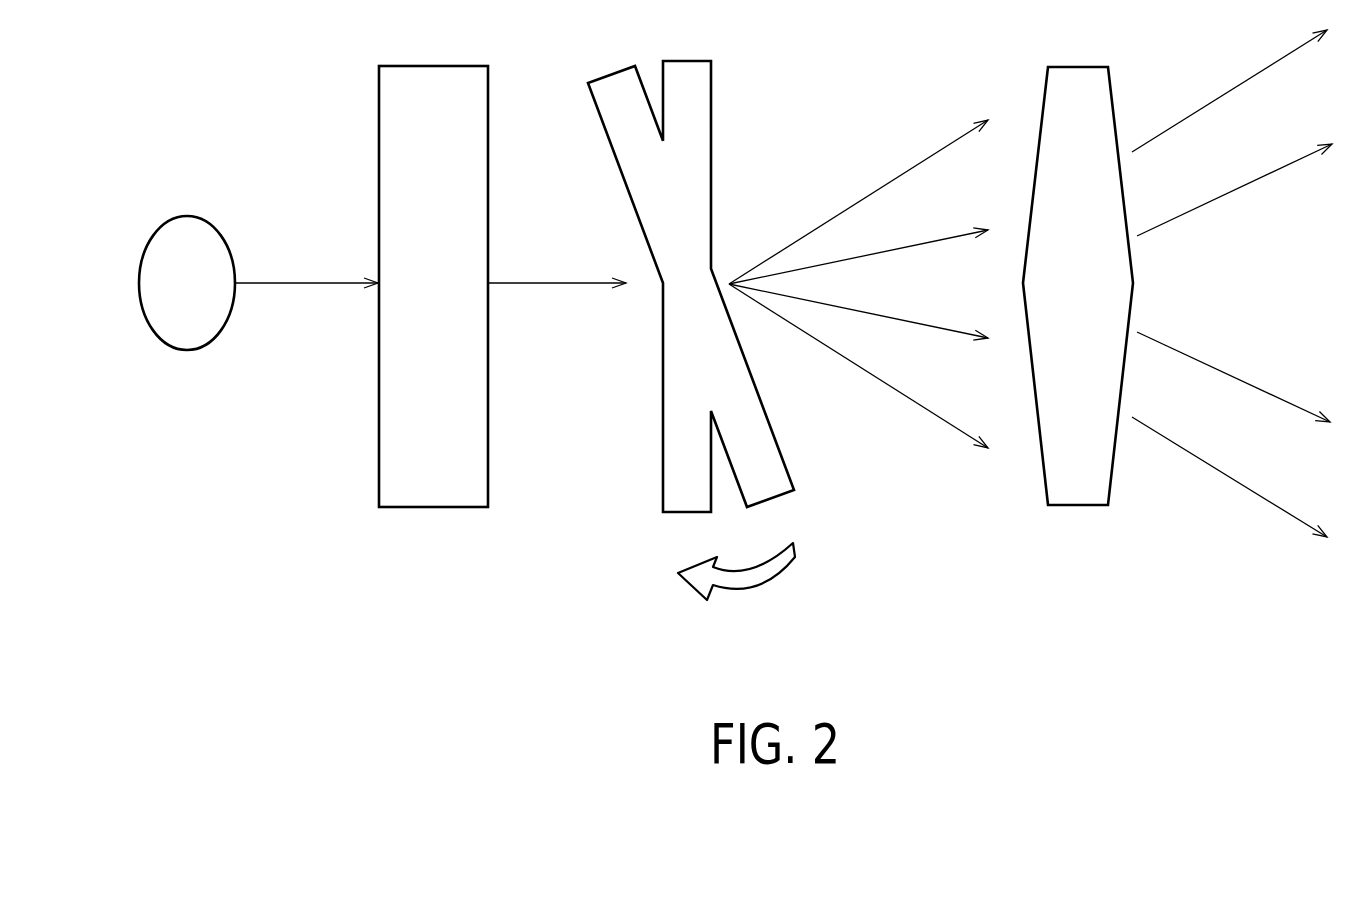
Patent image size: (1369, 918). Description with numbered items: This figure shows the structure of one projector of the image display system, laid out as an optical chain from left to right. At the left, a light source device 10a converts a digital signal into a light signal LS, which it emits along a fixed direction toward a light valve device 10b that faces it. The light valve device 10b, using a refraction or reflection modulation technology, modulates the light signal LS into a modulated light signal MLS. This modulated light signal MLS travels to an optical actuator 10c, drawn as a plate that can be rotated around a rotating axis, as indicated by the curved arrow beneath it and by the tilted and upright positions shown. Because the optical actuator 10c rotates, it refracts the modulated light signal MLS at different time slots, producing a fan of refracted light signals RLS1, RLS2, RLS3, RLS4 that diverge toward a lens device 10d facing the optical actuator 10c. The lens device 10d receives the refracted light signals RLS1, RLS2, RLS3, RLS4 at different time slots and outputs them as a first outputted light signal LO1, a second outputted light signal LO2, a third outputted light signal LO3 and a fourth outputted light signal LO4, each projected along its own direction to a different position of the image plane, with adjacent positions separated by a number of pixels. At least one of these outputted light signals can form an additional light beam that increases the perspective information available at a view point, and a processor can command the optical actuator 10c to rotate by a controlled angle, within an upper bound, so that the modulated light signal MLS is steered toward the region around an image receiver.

The light source device 10a is at (190, 350).
The light valve device 10b is at (443, 507).
The optical actuator 10c is at (783, 493).
The lens device 10d is at (1072, 505).
The light signal LS is at (306, 267).
The modulated light signal MLS is at (557, 266).
The refracted light signal RLS1 is at (858, 202).
The refracted light signal RLS2 is at (858, 245).
The refracted light signal RLS3 is at (858, 311).
The refracted light signal RLS4 is at (858, 366).
The first outputted light signal LO1 is at (1229, 91).
The second outputted light signal LO2 is at (1234, 190).
The third outputted light signal LO3 is at (1233, 373).
The fourth outputted light signal LO4 is at (1229, 477).